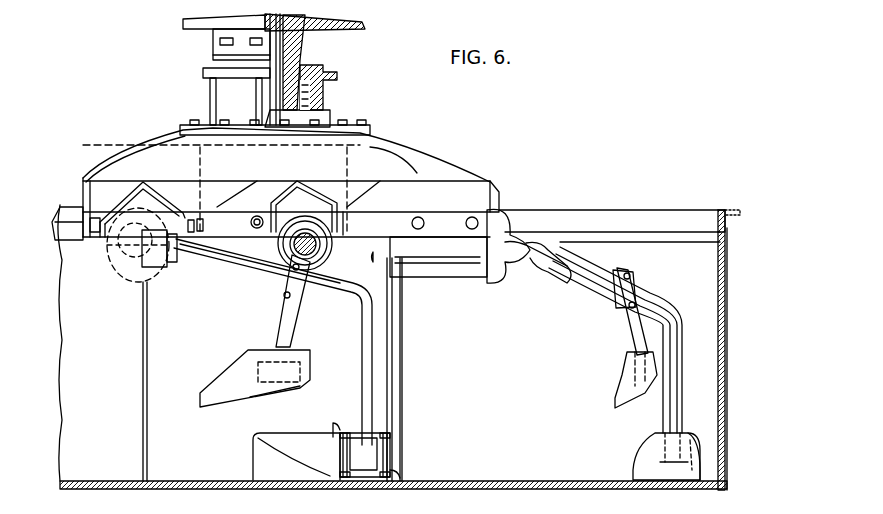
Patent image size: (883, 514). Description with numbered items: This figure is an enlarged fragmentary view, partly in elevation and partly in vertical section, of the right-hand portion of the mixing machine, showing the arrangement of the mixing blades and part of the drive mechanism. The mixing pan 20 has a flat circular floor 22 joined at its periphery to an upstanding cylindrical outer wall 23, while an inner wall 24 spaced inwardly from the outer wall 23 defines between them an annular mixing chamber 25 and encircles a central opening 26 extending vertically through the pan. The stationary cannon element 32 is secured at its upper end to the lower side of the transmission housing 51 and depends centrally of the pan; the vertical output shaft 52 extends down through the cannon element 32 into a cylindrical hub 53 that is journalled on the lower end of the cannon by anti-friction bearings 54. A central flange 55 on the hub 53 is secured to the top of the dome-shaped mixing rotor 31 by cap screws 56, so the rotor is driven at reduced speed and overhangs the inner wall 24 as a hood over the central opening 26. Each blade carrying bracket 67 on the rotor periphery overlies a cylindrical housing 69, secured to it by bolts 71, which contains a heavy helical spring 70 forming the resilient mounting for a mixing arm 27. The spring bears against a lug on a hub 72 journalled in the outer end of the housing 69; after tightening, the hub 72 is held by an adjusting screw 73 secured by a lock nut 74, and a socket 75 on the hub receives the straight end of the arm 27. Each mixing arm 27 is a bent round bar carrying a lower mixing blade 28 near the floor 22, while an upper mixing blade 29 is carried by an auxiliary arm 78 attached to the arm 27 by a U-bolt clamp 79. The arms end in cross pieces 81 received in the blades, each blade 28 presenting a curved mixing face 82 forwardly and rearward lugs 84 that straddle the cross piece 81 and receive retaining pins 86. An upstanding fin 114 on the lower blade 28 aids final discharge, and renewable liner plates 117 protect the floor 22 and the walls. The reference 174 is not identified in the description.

The mixing pan 20 is at (656, 214).
The floor 22 is at (142, 484).
The outer wall 23 is at (728, 318).
The inner wall 24 is at (140, 408).
The mixing chamber 25 is at (569, 211).
The central opening 26 is at (394, 298).
The mixing arm 27 is at (232, 280).
The lower mixing blade 28 is at (650, 457).
The upper mixing blade 29 is at (210, 388).
The mixing rotor 31 is at (400, 150).
The cannon element 32 is at (312, 60).
The transmission housing 51 is at (362, 26).
The output shaft 52 is at (268, 45).
The hub 53 is at (330, 135).
The anti-friction bearings 54 is at (327, 100).
The central flange 55 is at (186, 131).
The cap screws 56 is at (222, 131).
The blade carrying bracket 67 is at (300, 178).
The cylindrical housing 69 is at (140, 275).
The helical spring 70 is at (259, 214).
The bolts 71 is at (95, 216).
The hub 72 is at (138, 172).
The adjusting screw 73 is at (291, 217).
The lock nut 74 is at (187, 218).
The socket 75 is at (118, 275).
The auxiliary arm 78 is at (296, 326).
The U-bolt clamp 79 is at (612, 303).
The cross piece 81 is at (360, 455).
The mixing face 82 is at (402, 474).
The lugs 84 is at (333, 425).
The retaining pin 86 is at (340, 452).
The fin 114 is at (253, 458).
The liner plates 117 is at (103, 480).
The flange element 174 is at (615, 210).